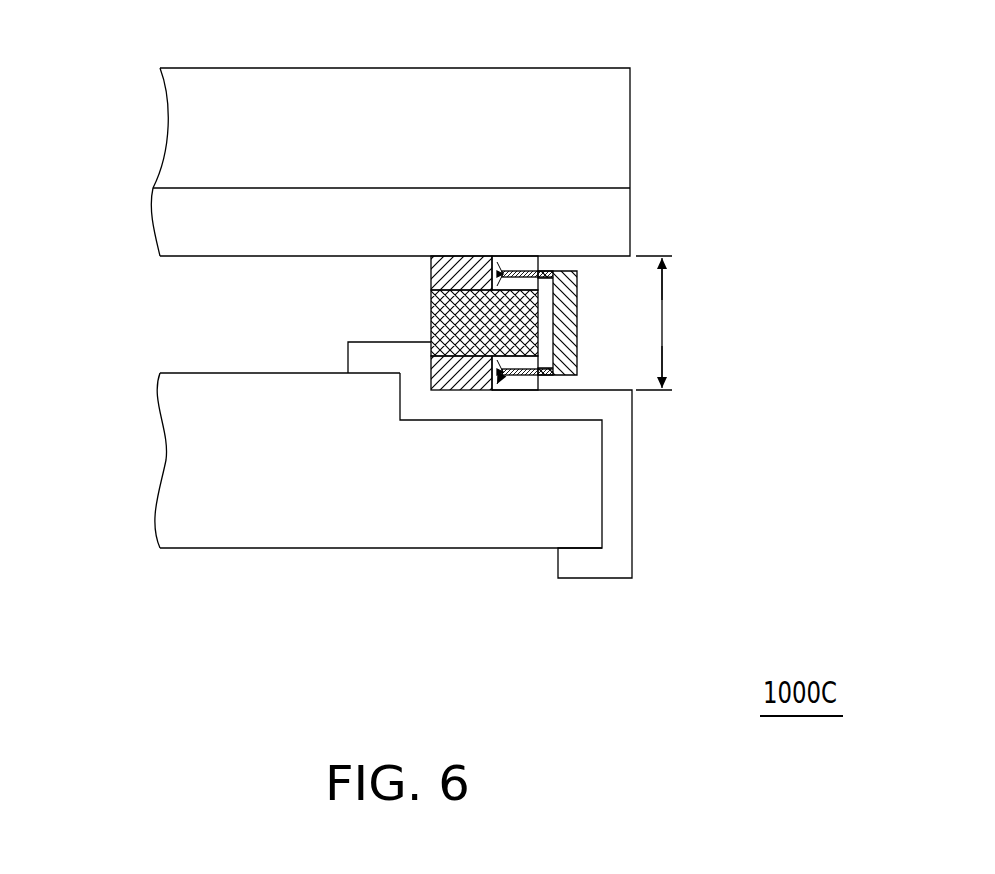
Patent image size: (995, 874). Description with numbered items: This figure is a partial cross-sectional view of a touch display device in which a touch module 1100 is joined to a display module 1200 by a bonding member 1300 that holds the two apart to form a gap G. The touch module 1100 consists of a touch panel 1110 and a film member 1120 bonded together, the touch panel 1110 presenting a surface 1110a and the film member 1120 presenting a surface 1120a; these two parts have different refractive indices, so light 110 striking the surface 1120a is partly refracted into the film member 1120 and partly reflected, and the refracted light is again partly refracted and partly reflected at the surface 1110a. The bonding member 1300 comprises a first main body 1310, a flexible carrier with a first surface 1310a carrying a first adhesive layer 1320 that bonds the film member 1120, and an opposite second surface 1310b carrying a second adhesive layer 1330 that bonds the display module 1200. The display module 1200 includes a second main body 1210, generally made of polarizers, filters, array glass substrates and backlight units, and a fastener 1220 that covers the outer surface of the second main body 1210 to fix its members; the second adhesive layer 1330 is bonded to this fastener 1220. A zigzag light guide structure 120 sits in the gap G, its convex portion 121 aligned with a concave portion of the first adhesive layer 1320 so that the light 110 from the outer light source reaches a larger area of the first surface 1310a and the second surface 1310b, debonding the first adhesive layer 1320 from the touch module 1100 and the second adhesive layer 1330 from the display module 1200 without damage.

The touch module 1100 is at (405, 161).
The touch panel 1110 is at (213, 118).
The surface of the touch panel 1110a is at (192, 190).
The film member 1120 is at (278, 212).
The surface of the film member 1120a is at (190, 258).
The display module 1200 is at (436, 491).
The second main body 1210 is at (217, 507).
The fastener 1220 is at (583, 562).
The bonding member 1300 is at (392, 327).
The first main body 1310 is at (453, 318).
The first surface 1310a is at (453, 288).
The second surface 1310b is at (469, 360).
The first adhesive layer 1320 is at (475, 260).
The second adhesive layer 1330 is at (443, 373).
The light guide structure 120 is at (654, 259).
The convex portion 121 is at (537, 268).
The light 110 is at (497, 260).
The gap G is at (664, 323).